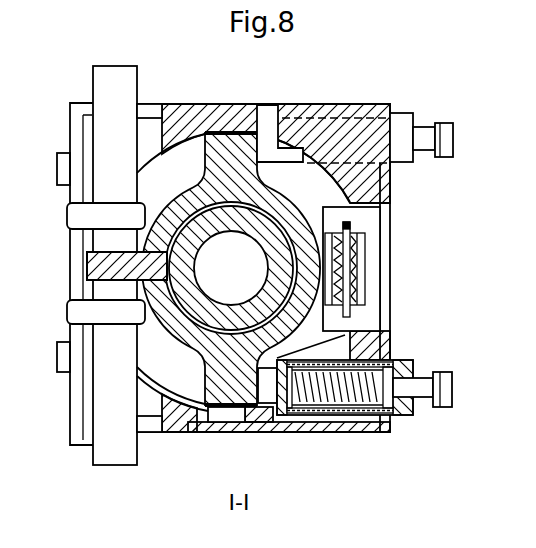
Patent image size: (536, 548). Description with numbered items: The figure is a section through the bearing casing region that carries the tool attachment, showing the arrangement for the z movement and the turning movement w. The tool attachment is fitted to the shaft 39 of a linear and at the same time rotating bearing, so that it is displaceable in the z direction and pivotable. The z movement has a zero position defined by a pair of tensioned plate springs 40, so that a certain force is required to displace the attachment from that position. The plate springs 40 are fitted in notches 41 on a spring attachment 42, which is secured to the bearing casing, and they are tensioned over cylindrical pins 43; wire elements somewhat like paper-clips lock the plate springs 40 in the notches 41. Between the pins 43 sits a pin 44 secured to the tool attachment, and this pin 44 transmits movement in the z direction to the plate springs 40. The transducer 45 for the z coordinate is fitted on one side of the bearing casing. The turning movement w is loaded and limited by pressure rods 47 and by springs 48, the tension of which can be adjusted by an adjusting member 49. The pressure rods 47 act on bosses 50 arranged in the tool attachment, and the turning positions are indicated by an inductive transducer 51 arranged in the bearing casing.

The shaft 39 is at (220, 285).
The plate springs 40 is at (110, 80).
The notches 41 is at (143, 106).
The spring attachment 42 is at (78, 128).
The cylindrical pins 43 is at (85, 216).
The pin 44 is at (107, 264).
The transducer 45 is at (362, 223).
The pressure rods 47 is at (268, 140).
The springs 48 is at (358, 400).
The adjusting member 49 is at (457, 138).
The bosses 50 is at (217, 148).
The inductive transducer 51 is at (227, 420).